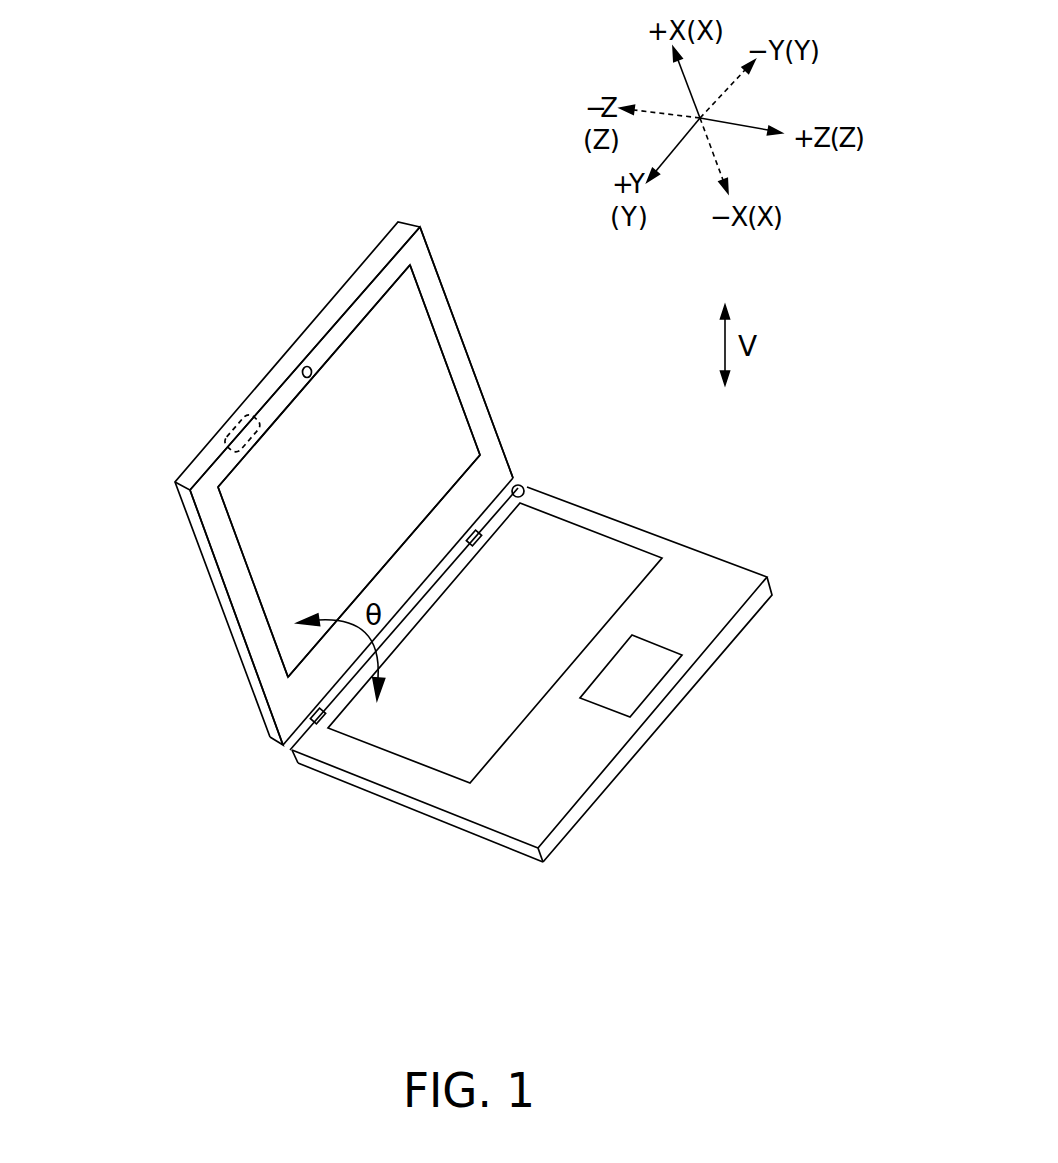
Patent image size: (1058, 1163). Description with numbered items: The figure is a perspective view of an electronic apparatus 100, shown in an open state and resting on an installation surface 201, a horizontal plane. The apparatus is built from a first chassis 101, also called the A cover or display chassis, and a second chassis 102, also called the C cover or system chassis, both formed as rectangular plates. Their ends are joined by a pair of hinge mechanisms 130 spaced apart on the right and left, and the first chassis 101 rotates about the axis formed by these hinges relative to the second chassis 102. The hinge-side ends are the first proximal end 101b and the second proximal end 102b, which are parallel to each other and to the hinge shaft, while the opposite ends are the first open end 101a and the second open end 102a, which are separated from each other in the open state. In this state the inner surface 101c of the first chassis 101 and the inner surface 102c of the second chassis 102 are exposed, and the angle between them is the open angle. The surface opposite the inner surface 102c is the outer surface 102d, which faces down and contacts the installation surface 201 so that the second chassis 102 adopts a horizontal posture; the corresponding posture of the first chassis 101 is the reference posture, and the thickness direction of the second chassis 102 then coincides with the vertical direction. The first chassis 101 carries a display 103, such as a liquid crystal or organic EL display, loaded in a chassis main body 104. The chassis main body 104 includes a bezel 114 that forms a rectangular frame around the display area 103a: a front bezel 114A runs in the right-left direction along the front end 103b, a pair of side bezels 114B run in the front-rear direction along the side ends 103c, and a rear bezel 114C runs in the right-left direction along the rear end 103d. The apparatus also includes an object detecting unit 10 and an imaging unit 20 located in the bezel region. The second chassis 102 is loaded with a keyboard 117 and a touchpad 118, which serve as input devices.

The electronic apparatus 100 is at (243, 212).
The first chassis 101 is at (432, 214).
The first open end 101a is at (180, 475).
The first proximal end 101b is at (528, 480).
The inner surface of the first chassis 101c is at (245, 605).
The second chassis 102 is at (764, 553).
The second open end 102a is at (743, 618).
The second proximal end 102b is at (290, 755).
The inner surface of the second chassis 102c is at (425, 783).
The outer surface 102d is at (508, 818).
The display 103 is at (448, 420).
The display area 103a is at (349, 471).
The front end of the display area 103b is at (345, 333).
The side ends of the display area 103c is at (448, 365).
The rear end of the display area 103d is at (412, 537).
The chassis main body 104 is at (205, 570).
The object detecting unit 10 is at (233, 415).
The imaging unit 20 is at (303, 365).
The bezel 114 is at (433, 287).
The front bezel 114A is at (363, 300).
The side bezel 114B is at (440, 318).
The rear bezel 114C is at (397, 593).
The keyboard 117 is at (602, 555).
The touchpad 118 is at (642, 677).
The hinge mechanism 130 is at (320, 702).
The installation surface 201 is at (648, 838).